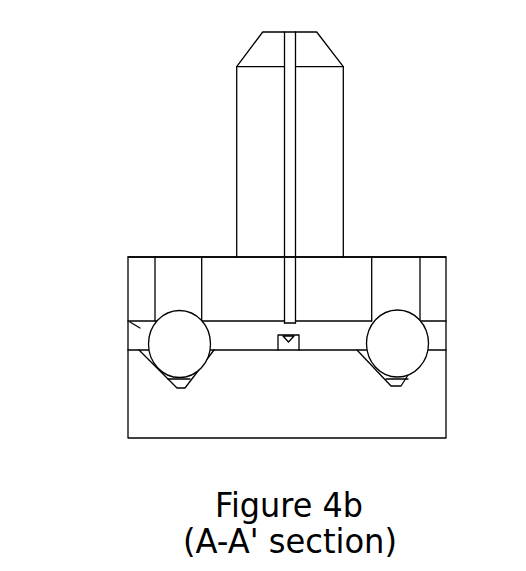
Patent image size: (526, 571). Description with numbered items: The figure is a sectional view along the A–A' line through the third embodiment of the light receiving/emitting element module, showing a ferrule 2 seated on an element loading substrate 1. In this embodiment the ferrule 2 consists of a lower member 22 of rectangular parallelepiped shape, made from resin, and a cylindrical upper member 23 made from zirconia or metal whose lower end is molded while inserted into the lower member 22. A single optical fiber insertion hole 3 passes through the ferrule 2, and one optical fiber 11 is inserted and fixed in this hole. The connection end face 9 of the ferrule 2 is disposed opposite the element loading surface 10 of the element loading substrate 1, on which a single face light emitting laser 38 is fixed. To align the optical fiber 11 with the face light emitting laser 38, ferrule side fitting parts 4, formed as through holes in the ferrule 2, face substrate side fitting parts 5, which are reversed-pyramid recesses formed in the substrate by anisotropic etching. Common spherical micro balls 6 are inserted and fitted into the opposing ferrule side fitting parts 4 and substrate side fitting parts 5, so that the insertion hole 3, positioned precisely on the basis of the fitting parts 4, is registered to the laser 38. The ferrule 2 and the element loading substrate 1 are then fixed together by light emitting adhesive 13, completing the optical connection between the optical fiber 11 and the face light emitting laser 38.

The element loading substrate 1 is at (423, 422).
The ferrule 2 is at (327, 158).
The optical fiber insertion hole 3 is at (296, 50).
The ferrule side fitting part 4 is at (165, 290).
The substrate side fitting part 5 is at (178, 390).
The micro ball 6 is at (165, 344).
The connection end face 9 is at (128, 332).
The element loading surface 10 is at (129, 339).
The optical fiber 11 is at (285, 202).
The light emitting adhesive 13 is at (444, 330).
The lower member 22 is at (137, 266).
The upper member 23 is at (327, 192).
The face light emitting laser 38 is at (288, 341).